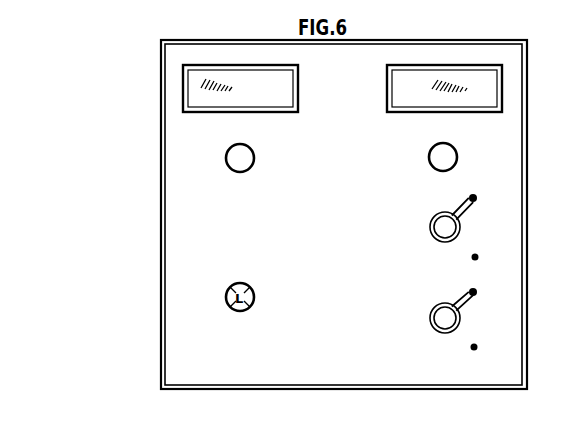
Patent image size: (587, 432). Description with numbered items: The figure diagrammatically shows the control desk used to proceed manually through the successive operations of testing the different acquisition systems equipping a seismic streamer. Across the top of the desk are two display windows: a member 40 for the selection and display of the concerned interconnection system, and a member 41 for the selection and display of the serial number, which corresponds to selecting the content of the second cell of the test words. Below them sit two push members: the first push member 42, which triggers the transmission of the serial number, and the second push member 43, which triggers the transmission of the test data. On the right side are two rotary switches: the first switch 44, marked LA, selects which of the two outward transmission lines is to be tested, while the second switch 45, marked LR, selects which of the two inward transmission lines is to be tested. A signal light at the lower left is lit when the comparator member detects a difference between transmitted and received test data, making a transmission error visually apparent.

The member for selection and display of interconnection system 40 is at (298, 88).
The member for selection and display of serial number 41 is at (387, 87).
The push member P1 42 is at (254, 153).
The push member P2 43 is at (430, 148).
The switch C1 44 is at (437, 215).
The switch C2 45 is at (437, 306).